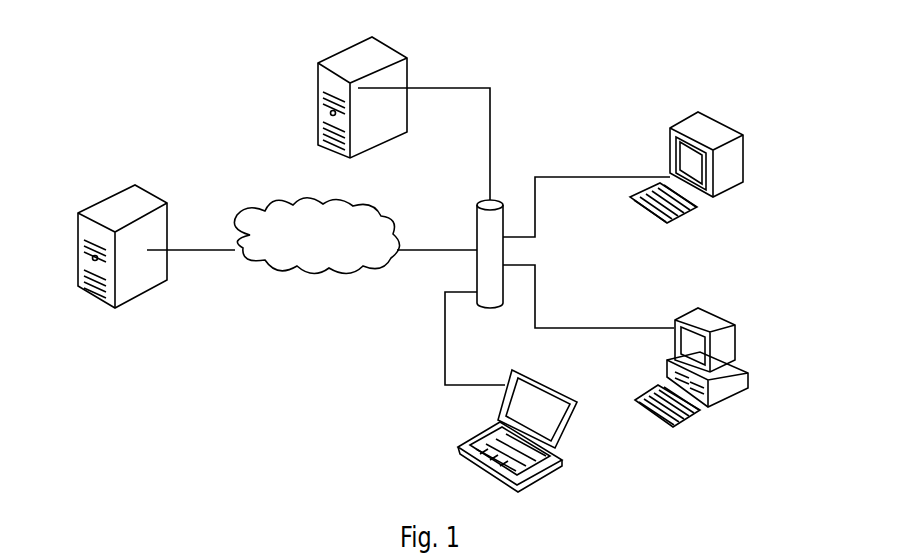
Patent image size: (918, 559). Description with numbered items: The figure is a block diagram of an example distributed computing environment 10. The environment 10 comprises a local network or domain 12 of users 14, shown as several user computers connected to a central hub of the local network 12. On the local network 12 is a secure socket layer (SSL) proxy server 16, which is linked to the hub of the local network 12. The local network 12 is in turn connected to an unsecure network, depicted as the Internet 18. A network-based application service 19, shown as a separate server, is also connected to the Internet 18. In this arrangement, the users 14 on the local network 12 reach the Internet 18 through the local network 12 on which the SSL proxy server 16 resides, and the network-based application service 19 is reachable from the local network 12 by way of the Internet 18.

The distributed computing environment 10 is at (232, 118).
The local network 12 is at (497, 193).
The users 14 is at (730, 108).
The secure socket layer (SSL) proxy server 16 is at (314, 62).
The Internet 18 is at (297, 215).
The network-based application service 19 is at (135, 185).